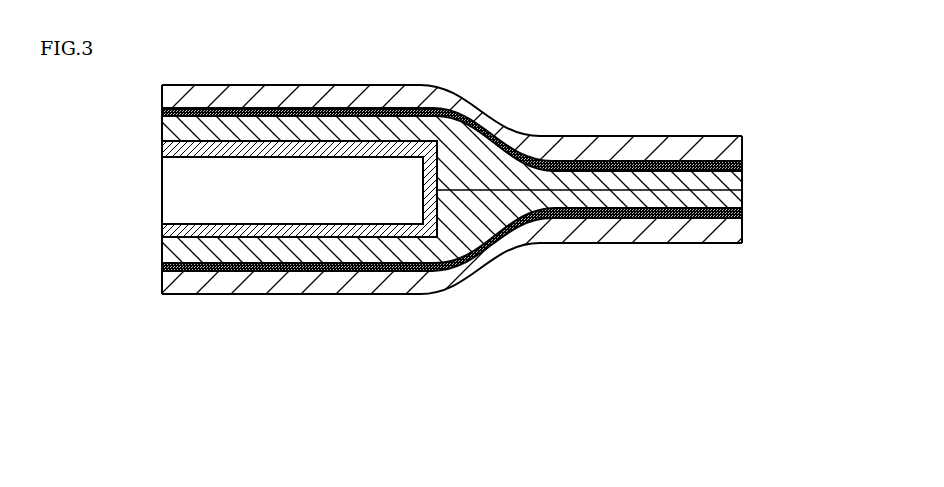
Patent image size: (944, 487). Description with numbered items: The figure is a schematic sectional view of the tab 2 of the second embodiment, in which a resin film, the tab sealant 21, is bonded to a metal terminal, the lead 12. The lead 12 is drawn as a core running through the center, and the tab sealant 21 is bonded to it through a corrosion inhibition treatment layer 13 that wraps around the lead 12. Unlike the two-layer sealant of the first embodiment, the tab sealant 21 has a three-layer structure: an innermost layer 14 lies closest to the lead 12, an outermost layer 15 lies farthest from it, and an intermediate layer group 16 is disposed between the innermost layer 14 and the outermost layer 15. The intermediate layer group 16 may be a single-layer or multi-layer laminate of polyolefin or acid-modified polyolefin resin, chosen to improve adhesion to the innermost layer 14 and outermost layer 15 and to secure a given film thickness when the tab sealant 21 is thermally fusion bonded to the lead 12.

The tab 2 is at (746, 99).
The lead 12 is at (170, 190).
The corrosion inhibition treatment layer 13 is at (168, 145).
The innermost layer 14 is at (728, 183).
The outermost layer 15 is at (728, 150).
The intermediate layer group 16 is at (728, 166).
The tab sealant 21 is at (806, 118).